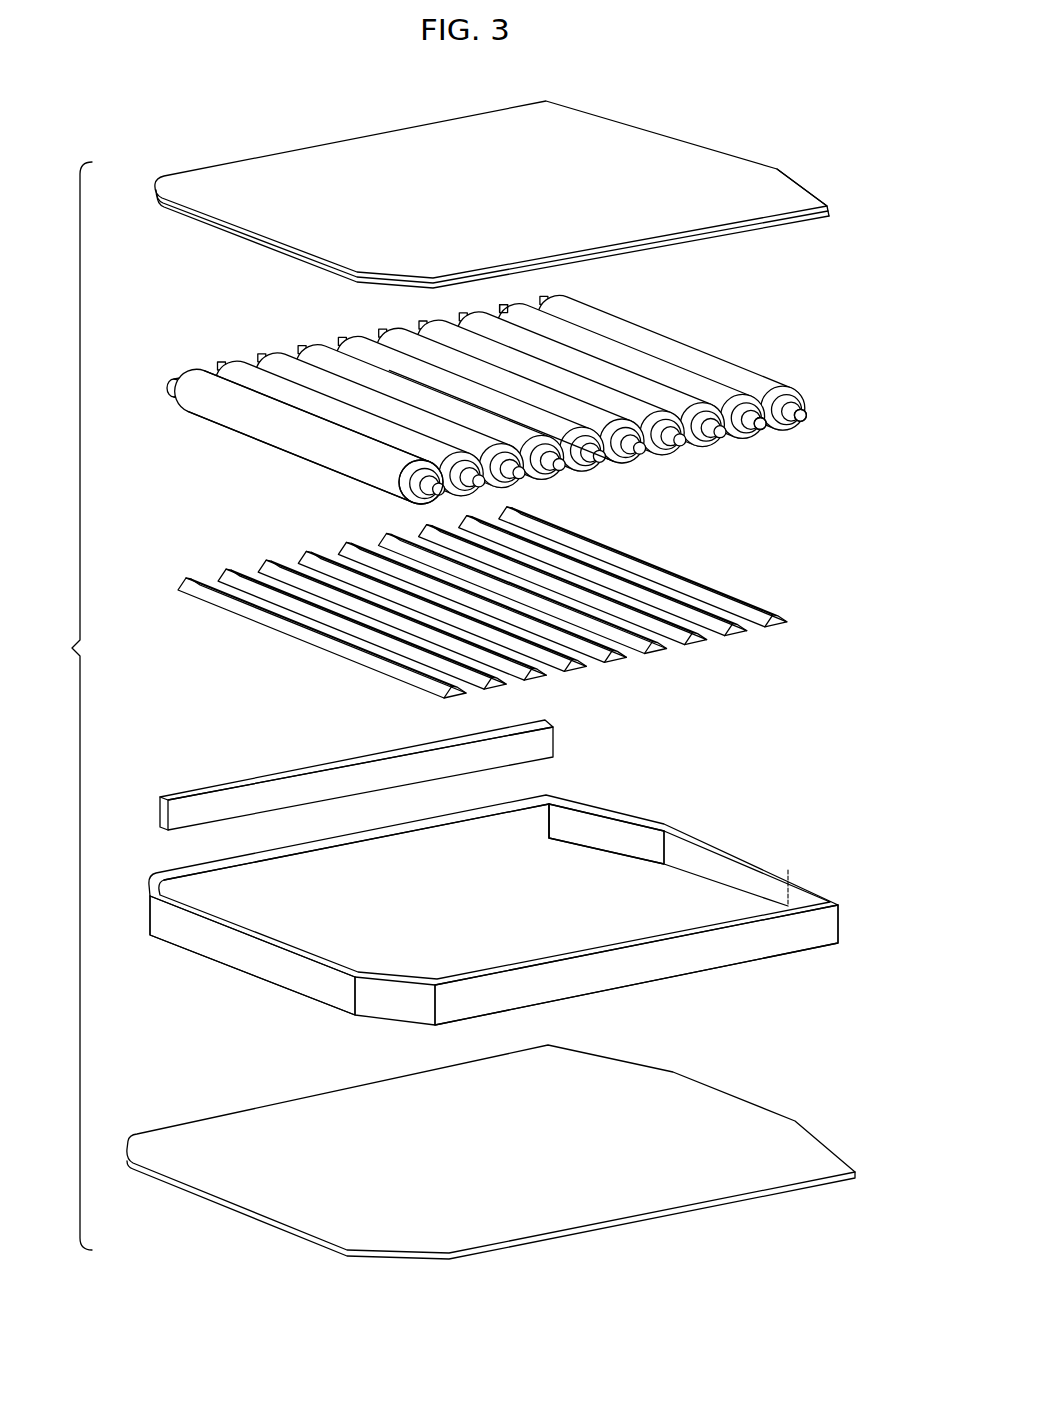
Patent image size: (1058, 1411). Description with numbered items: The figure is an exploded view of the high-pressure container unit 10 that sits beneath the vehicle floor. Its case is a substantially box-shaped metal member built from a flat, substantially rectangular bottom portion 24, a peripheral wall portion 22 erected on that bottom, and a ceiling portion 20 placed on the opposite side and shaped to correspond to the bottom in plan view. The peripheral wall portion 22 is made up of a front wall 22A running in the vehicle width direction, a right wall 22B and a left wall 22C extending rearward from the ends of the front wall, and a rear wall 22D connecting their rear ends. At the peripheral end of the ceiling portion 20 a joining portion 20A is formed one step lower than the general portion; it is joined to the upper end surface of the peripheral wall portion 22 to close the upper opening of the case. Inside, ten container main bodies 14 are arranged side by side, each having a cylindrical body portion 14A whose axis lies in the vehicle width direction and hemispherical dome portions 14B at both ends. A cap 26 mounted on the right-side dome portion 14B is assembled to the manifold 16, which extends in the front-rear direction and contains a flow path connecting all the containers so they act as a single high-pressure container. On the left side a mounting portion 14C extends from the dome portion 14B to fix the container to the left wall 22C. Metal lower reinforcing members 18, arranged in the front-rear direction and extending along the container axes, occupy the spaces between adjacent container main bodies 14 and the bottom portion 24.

The high-pressure container unit 10 is at (66, 706).
The container main body 14 is at (475, 398).
The body portion 14A is at (670, 357).
The dome portion 14B is at (554, 295).
The mounting portion 14C is at (805, 421).
The manifold 16 is at (207, 785).
The lower reinforcing member 18 is at (686, 600).
The ceiling portion 20 is at (529, 181).
The joining portion 20A is at (820, 192).
The peripheral wall portion 22 is at (504, 900).
The front wall 22A is at (276, 963).
The right wall 22B is at (355, 859).
The left wall 22C is at (682, 955).
The rear wall 22D is at (698, 849).
The bottom portion 24 is at (595, 1232).
The cap 26 is at (212, 369).